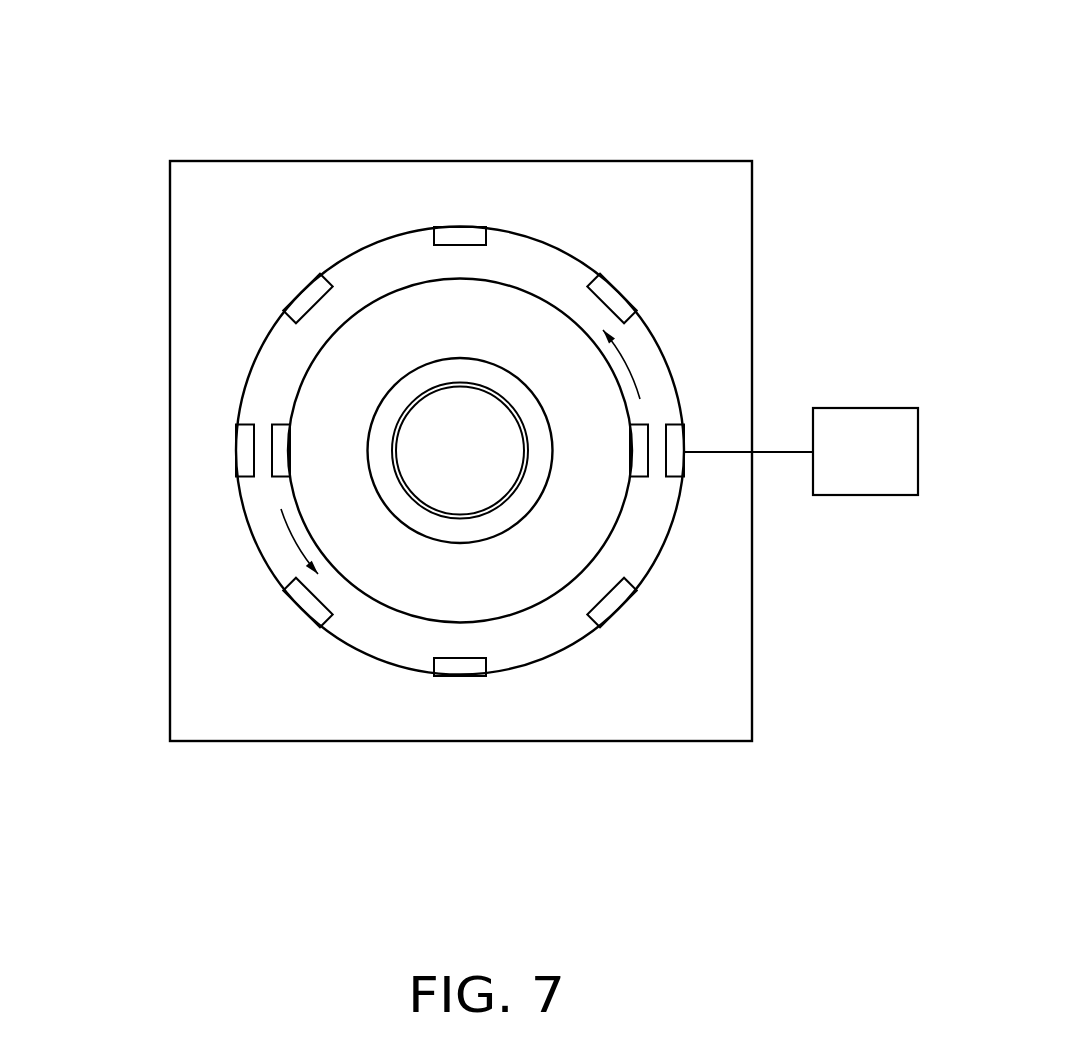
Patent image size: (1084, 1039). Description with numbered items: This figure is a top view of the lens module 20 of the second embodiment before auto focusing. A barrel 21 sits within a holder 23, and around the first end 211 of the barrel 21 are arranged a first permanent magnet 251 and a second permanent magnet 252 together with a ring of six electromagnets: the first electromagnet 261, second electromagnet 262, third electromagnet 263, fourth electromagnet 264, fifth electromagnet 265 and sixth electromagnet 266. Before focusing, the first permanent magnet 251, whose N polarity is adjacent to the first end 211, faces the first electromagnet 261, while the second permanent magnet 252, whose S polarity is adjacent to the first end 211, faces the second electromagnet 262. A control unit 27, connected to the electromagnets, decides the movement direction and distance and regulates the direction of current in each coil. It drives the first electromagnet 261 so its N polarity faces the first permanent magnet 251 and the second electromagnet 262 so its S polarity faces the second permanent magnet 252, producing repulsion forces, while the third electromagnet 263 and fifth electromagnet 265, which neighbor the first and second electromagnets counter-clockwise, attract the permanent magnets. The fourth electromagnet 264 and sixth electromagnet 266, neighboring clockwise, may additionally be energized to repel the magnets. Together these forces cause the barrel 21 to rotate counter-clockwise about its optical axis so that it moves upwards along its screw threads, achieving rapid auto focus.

The lens module 20 is at (480, 38).
The barrel 21 is at (393, 288).
The first end of the barrel 211 is at (466, 580).
The holder 23 is at (667, 147).
The first permanent magnet 251 is at (642, 477).
The second permanent magnet 252 is at (280, 428).
The first electromagnet 261 is at (680, 477).
The second electromagnet 262 is at (242, 472).
The third electromagnet 263 is at (630, 306).
The fourth electromagnet 264 is at (633, 590).
The fifth electromagnet 265 is at (280, 583).
The sixth electromagnet 266 is at (290, 312).
The control unit 27 is at (865, 408).